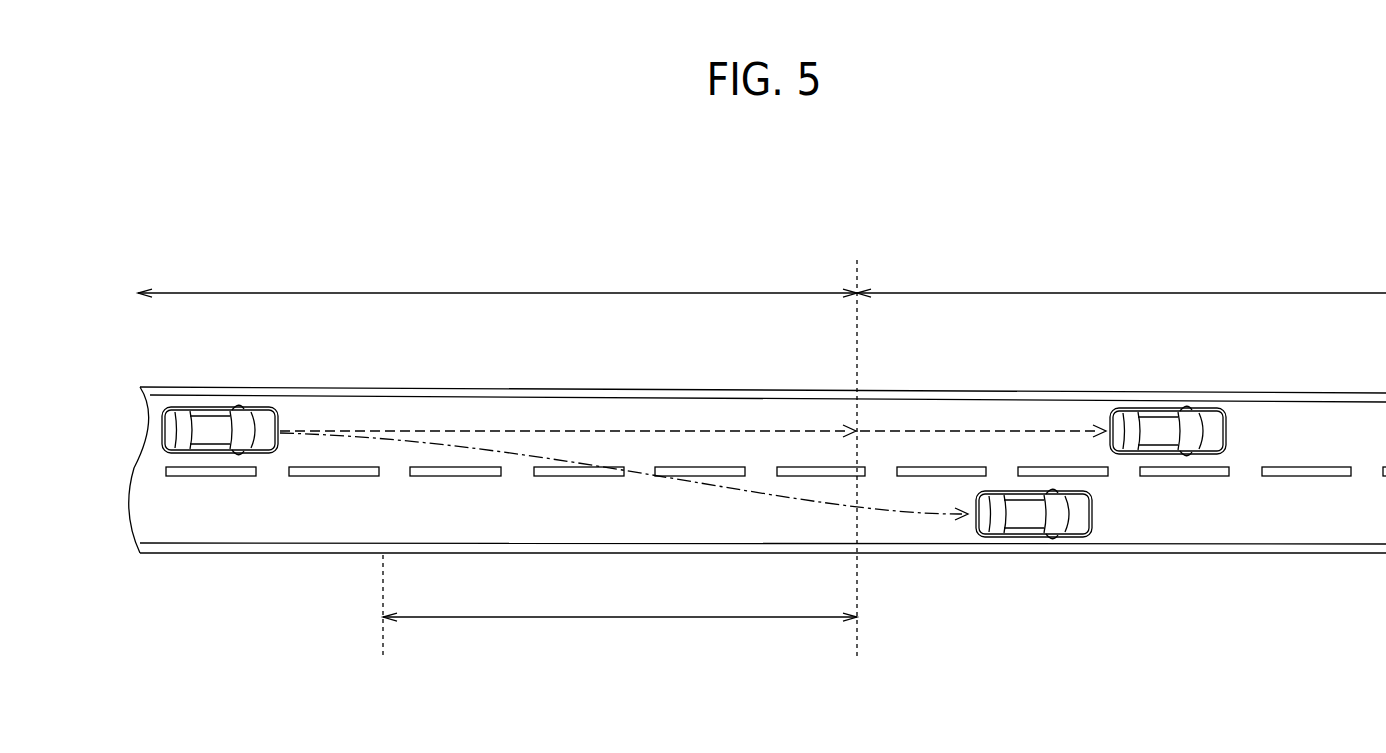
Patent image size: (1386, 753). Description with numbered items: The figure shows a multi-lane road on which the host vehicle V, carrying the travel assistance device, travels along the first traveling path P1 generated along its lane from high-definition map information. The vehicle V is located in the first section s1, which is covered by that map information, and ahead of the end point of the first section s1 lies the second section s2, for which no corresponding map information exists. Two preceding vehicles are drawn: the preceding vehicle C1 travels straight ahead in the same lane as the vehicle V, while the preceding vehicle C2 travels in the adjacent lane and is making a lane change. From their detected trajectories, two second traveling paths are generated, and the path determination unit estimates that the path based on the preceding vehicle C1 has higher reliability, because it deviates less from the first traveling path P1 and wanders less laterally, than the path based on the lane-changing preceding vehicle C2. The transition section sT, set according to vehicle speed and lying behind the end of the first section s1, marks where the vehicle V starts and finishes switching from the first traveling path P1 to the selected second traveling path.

The vehicle V is at (207, 430).
The preceding vehicle C1 is at (1152, 431).
The preceding vehicle C2 is at (1020, 516).
The first traveling path P1 is at (517, 430).
The first section s1 is at (497, 279).
The second section s2 is at (1121, 279).
The transition section sT is at (620, 635).